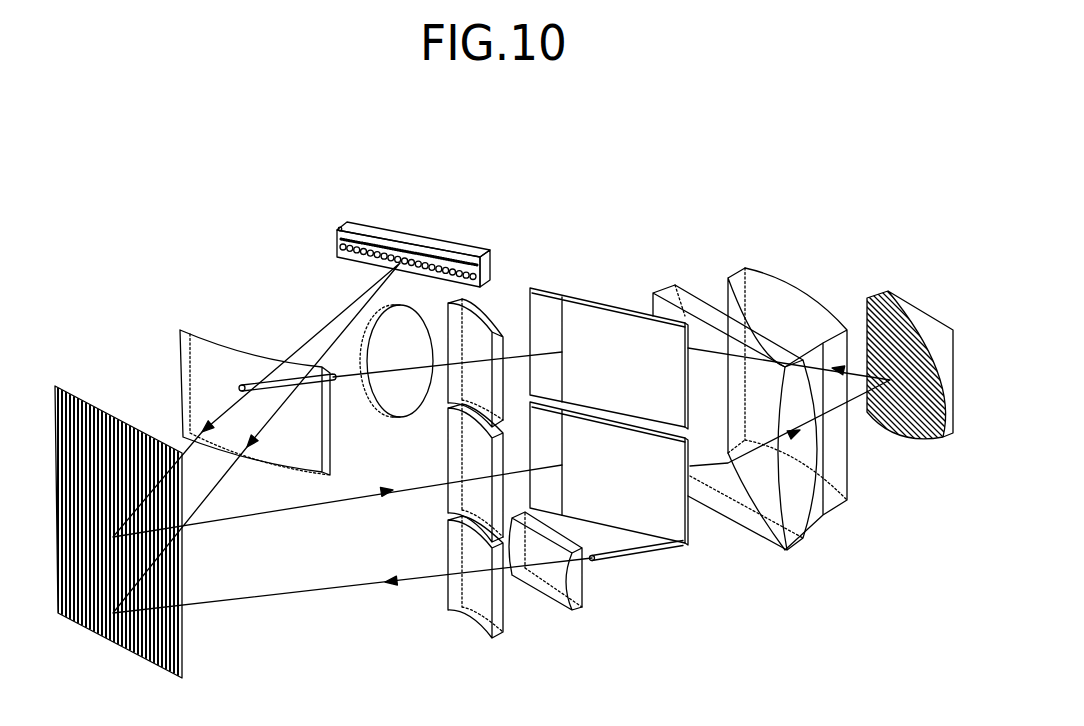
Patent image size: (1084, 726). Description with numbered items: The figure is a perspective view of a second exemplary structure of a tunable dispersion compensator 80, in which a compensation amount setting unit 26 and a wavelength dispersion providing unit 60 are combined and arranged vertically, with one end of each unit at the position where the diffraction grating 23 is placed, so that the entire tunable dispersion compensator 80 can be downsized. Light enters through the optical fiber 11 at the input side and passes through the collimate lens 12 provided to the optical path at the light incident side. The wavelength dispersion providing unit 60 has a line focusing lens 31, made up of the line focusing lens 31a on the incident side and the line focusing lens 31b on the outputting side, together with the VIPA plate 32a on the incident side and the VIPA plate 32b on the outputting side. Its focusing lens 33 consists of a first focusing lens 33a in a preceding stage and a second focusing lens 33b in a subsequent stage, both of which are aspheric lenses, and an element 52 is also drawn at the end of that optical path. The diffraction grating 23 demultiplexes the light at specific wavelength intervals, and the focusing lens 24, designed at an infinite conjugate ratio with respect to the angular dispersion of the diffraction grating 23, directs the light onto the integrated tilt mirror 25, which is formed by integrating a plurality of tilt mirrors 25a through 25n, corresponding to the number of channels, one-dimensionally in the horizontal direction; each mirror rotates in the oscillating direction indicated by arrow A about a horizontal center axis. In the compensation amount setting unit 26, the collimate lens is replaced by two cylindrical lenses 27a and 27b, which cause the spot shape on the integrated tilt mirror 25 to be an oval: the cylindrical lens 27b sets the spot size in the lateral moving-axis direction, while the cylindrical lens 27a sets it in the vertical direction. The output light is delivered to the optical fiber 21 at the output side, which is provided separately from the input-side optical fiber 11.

The tunable dispersion compensator 80 is at (767, 160).
The diffraction grating 23 is at (73, 386).
The compensation amount setting unit 26 is at (237, 222).
The focusing lens 24 is at (220, 323).
The optical fiber 11 is at (287, 373).
The collimate lens 12 is at (433, 337).
The integrated tilt mirror 25 is at (386, 228).
The tilt mirror 25a is at (339, 227).
The tilt mirror 25n is at (467, 257).
The line focusing lens 31 is at (469, 364).
The line focusing lens 31a is at (500, 323).
The line focusing lens 31b is at (448, 440).
The cylindrical lens 27b is at (448, 546).
The cylindrical lens 27a is at (572, 612).
The VIPA plate 32a is at (533, 287).
The VIPA plate 32b is at (690, 545).
The optical fiber 21 is at (615, 558).
The wavelength dispersion providing unit 60 is at (675, 597).
The focusing lens 33 is at (750, 367).
The first focusing lens 33a is at (675, 283).
The second focusing lens 33b is at (773, 270).
The image sensor 52 is at (890, 293).